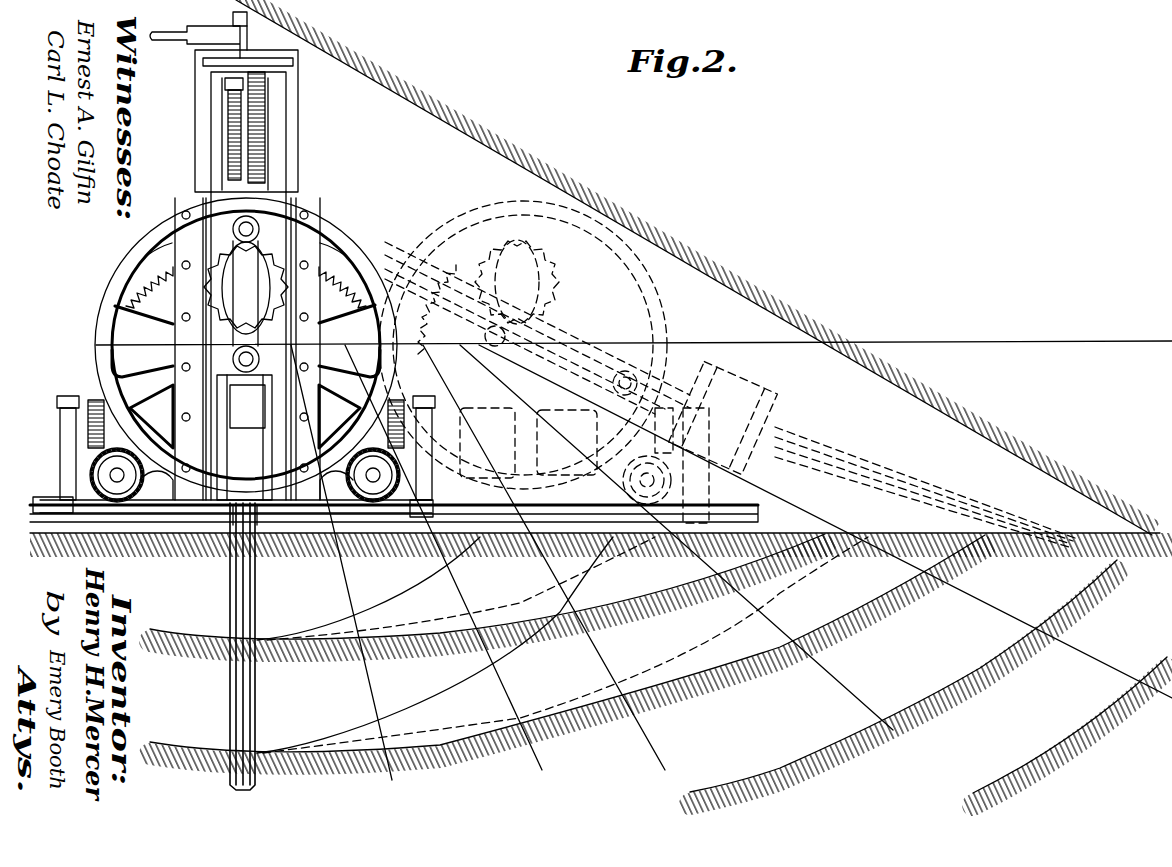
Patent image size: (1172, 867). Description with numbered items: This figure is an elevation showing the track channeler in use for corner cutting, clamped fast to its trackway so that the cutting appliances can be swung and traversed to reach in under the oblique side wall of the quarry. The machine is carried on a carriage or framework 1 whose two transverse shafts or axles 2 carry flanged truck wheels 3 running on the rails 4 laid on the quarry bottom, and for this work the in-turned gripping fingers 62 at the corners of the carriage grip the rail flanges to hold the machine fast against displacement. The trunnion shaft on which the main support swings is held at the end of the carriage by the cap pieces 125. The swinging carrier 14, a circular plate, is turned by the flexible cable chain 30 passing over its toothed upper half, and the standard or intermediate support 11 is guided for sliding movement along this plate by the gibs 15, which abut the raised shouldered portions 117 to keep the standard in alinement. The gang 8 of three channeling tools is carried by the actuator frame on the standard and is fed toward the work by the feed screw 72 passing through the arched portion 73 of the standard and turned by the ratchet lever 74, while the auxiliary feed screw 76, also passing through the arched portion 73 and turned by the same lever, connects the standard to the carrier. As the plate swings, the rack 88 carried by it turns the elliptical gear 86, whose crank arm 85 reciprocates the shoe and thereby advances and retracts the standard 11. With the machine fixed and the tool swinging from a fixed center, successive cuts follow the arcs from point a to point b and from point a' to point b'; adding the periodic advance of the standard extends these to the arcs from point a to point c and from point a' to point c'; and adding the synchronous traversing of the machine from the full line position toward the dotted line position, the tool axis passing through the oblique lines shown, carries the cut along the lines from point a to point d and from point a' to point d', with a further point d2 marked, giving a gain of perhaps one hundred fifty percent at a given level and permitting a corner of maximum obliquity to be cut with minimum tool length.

The carriage or framework 1 is at (180, 488).
The transverse shafts or axles 2 is at (115, 474).
The flanged truck wheels 3 is at (128, 486).
The rails 4 is at (44, 505).
The gang of channeling tools 8 is at (258, 690).
The standard or intermediate support 11 is at (291, 158).
The swinging carrier 14 is at (98, 318).
The gibs 15 is at (189, 224).
The flexible cable chain 30 is at (90, 394).
The gripping fingers 62 is at (62, 508).
The feed screw 72 is at (230, 137).
The arched portion 73 is at (265, 66).
The ratchet lever 74 is at (174, 34).
The auxiliary feed screw 76 is at (254, 127).
The crank arm 85 is at (254, 226).
The elliptical gear 86 is at (218, 295).
The rack 88 is at (140, 300).
The raised shouldered portions 117 is at (170, 250).
The cap pieces 125 is at (72, 398).
The point a is at (487, 592).
The point a' is at (567, 649).
The point b is at (375, 588).
The point b' is at (443, 644).
The point c is at (472, 588).
The point c' is at (582, 631).
The point d is at (838, 512).
The point d' is at (1010, 505).
The point d2 is at (1120, 560).